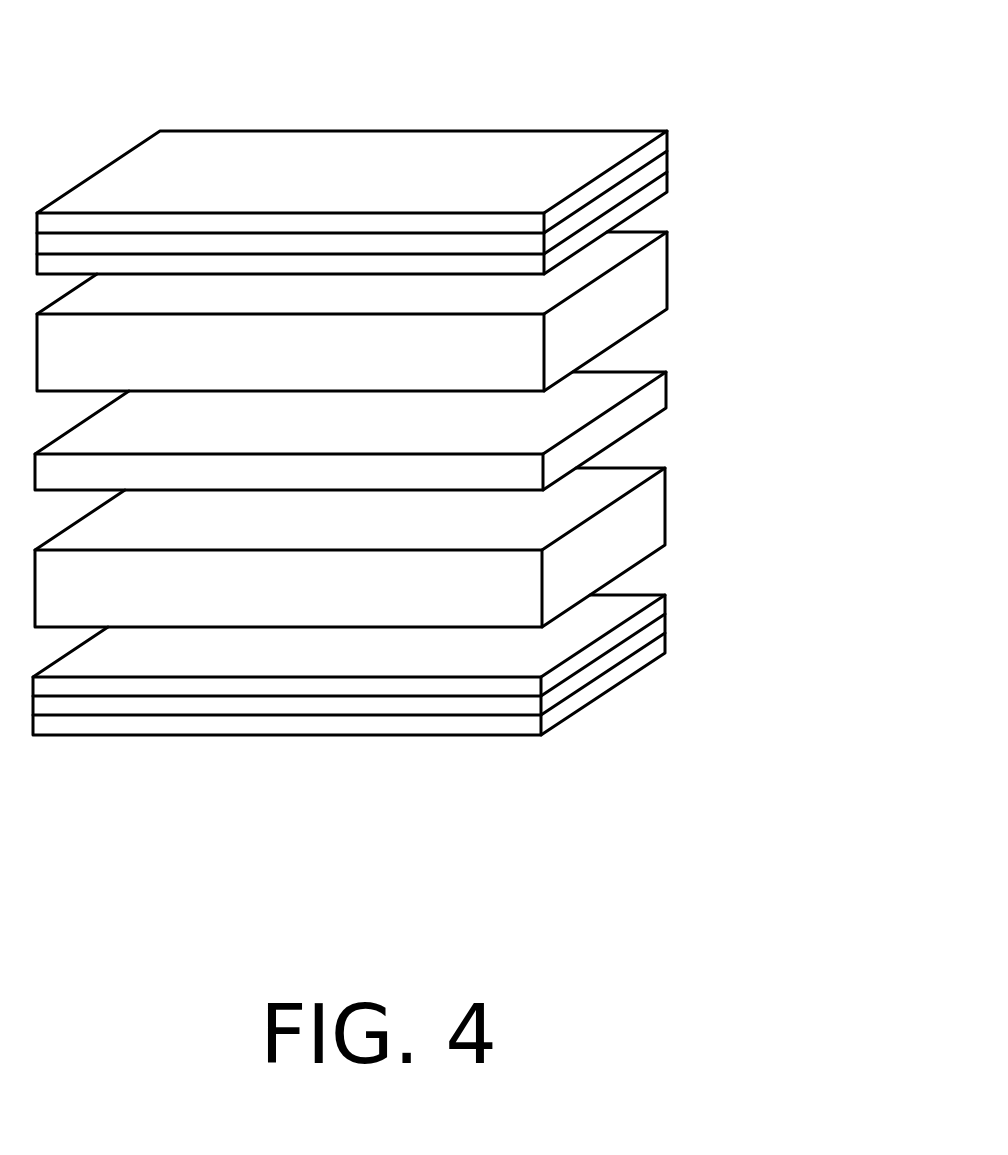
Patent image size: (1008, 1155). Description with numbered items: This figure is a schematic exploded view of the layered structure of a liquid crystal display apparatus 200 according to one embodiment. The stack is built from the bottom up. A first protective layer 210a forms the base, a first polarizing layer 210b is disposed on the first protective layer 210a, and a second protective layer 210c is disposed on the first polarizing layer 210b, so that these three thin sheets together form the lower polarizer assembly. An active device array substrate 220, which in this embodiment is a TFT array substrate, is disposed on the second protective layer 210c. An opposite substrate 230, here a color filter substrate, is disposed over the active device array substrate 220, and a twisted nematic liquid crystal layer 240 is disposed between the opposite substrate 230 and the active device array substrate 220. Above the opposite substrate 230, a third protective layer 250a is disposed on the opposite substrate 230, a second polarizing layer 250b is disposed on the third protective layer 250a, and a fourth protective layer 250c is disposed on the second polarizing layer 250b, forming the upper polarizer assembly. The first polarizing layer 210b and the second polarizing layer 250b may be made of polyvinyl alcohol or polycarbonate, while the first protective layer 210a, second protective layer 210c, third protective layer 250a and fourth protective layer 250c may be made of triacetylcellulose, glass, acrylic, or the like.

The liquid crystal display apparatus 200 is at (452, 421).
The first protective layer 210a is at (648, 655).
The first polarizing layer 210b is at (650, 634).
The second protective layer 210c is at (652, 611).
The active device array substrate 220 is at (638, 525).
The opposite substrate 230 is at (635, 292).
The twisted nematic liquid crystal layer 240 is at (668, 388).
The third protective layer 250a is at (652, 192).
The second polarizing layer 250b is at (652, 172).
The fourth protective layer 250c is at (653, 151).